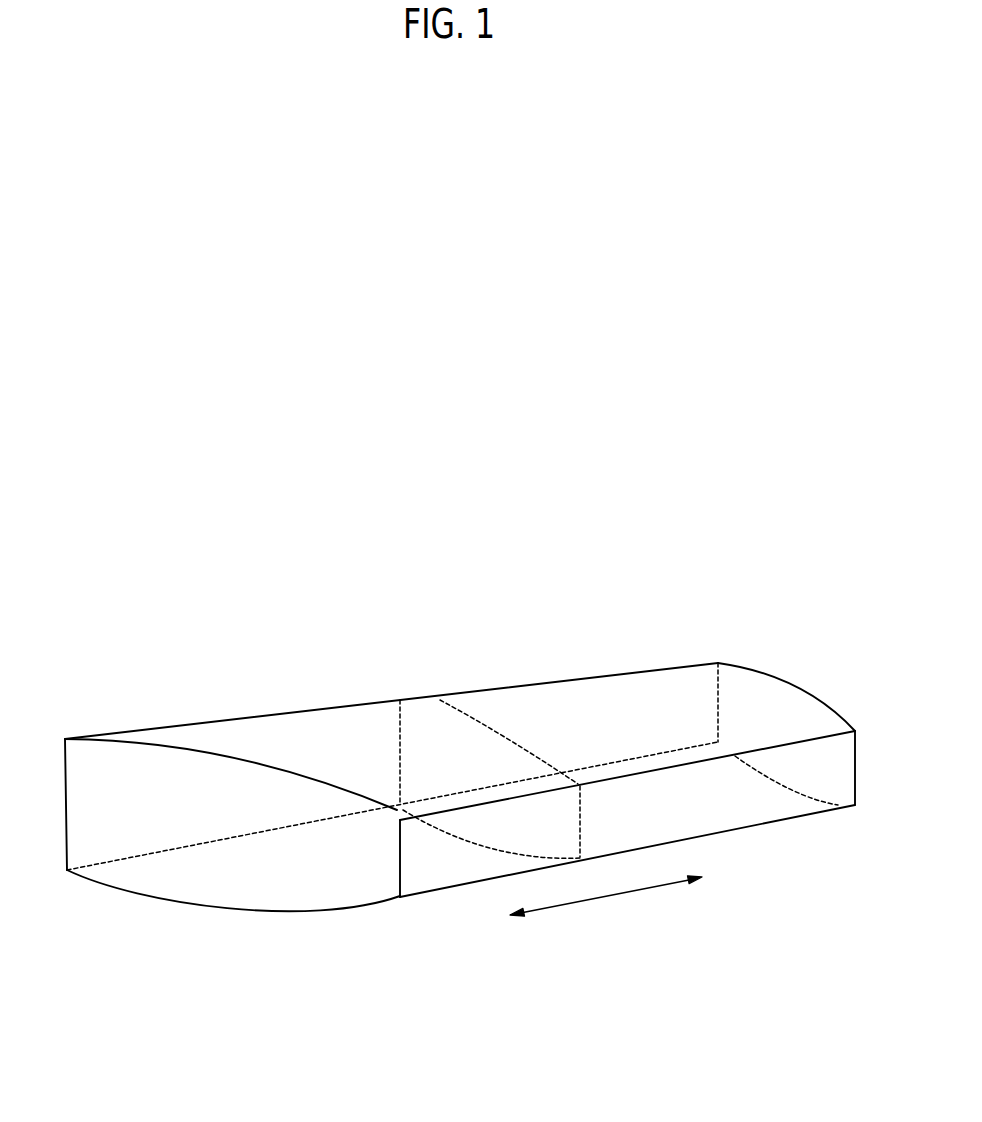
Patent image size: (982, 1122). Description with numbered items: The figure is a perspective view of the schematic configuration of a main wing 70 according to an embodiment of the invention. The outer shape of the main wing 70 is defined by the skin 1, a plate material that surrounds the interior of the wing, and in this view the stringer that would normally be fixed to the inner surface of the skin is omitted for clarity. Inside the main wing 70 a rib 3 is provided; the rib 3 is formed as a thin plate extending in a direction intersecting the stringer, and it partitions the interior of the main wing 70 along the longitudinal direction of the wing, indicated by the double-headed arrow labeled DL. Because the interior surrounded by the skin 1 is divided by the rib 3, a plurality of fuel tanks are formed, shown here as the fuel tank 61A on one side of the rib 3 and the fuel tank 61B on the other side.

The main wing 70 is at (685, 553).
The skin 1 is at (287, 730).
The rib 3 is at (450, 752).
The fuel tank 61A is at (428, 870).
The fuel tank 61B is at (727, 807).